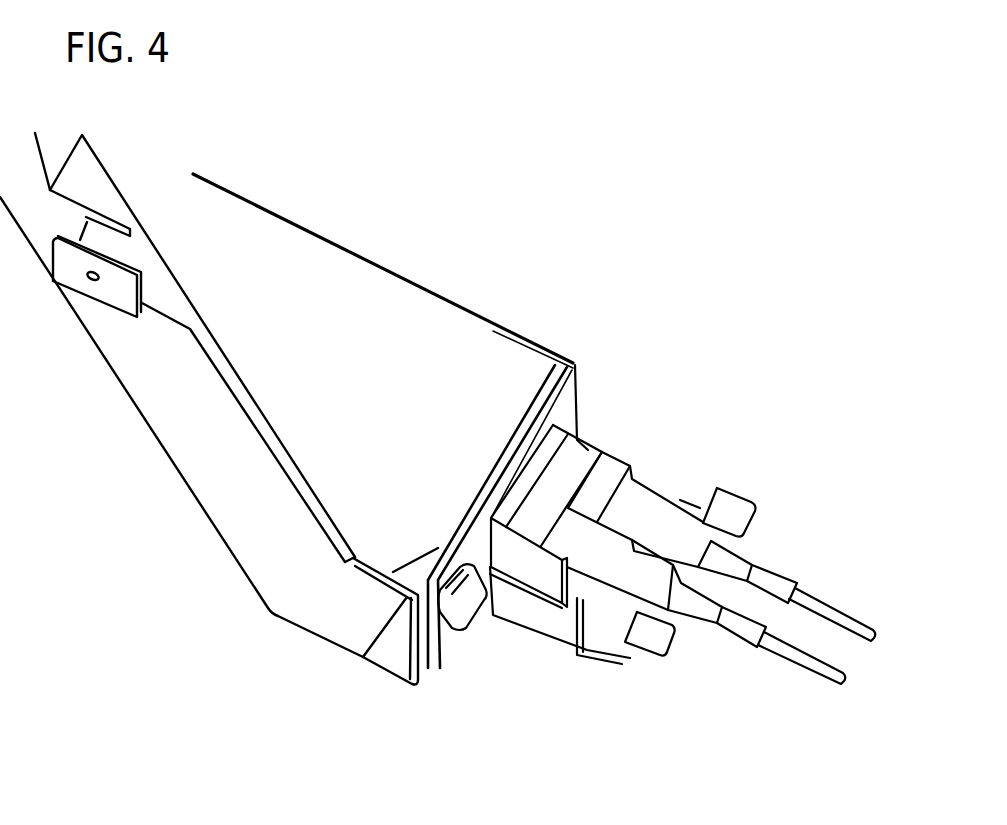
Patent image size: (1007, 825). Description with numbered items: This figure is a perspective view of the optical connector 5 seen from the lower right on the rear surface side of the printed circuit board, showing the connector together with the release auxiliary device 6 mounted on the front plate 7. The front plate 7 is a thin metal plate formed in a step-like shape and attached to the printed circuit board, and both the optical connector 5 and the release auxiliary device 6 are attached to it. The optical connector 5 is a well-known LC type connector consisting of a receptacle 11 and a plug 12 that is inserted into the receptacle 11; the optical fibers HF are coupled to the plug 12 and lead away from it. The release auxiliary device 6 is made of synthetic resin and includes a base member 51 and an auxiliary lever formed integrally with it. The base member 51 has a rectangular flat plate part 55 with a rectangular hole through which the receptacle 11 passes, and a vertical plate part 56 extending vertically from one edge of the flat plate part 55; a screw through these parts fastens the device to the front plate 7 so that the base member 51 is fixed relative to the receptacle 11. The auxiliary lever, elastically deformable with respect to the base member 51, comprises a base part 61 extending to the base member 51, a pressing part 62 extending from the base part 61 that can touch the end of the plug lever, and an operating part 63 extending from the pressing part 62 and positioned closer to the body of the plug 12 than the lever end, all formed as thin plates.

The front plate 7 is at (375, 288).
The base member 51 is at (551, 454).
The vertical plate part 56 is at (532, 340).
The flat plate part 55 is at (561, 417).
The optical connector 5 is at (684, 520).
The receptacle 11 is at (592, 448).
The plug 12 is at (660, 527).
The operating part 63 is at (742, 519).
The optical fibers HF is at (848, 613).
The release auxiliary device 6 is at (513, 627).
The base part 61 is at (565, 633).
The pressing part 62 is at (590, 637).